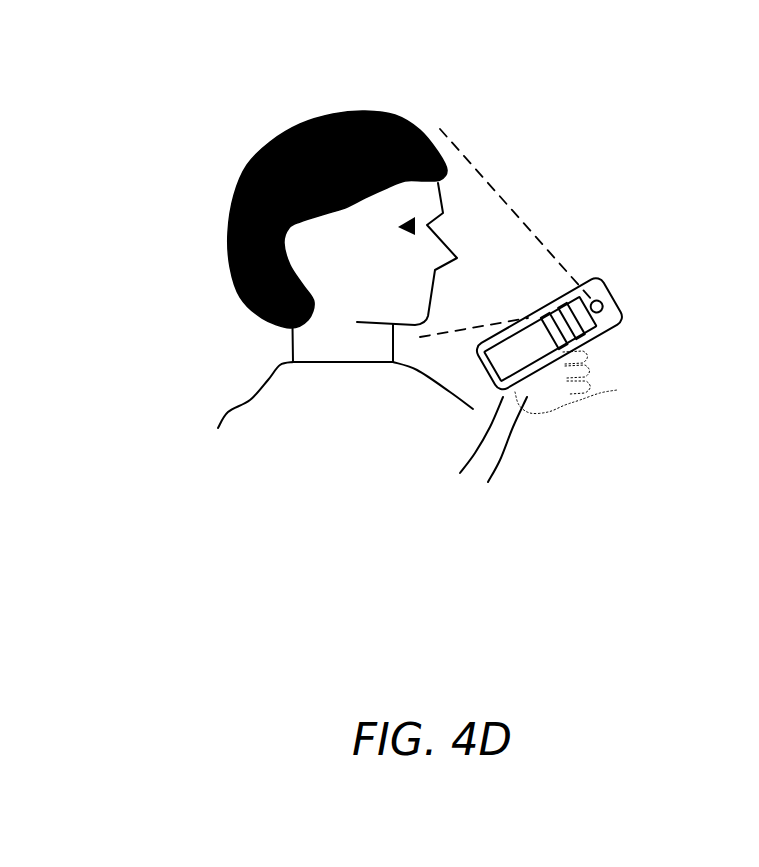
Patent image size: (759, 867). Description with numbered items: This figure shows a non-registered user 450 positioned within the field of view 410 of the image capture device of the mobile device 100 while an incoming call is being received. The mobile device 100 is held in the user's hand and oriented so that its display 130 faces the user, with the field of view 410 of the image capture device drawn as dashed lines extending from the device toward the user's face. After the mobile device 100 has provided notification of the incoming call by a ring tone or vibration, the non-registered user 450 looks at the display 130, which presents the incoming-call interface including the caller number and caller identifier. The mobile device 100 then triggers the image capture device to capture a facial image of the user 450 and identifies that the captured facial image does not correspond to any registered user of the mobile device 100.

The mobile device 100 is at (604, 286).
The display 130 is at (527, 373).
The field of view 410 is at (455, 146).
The non-registered user 450 is at (338, 117).